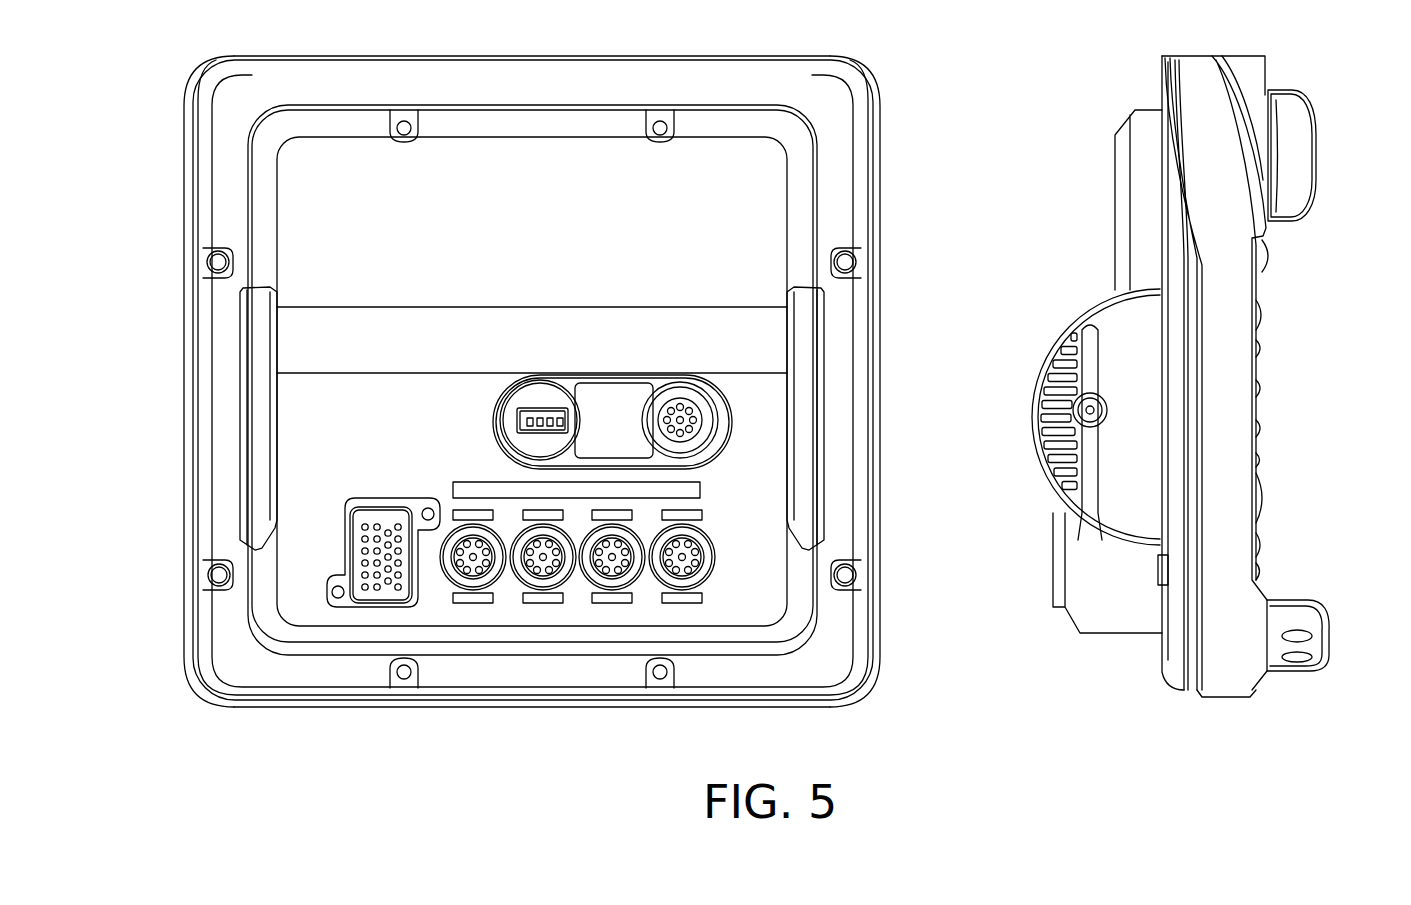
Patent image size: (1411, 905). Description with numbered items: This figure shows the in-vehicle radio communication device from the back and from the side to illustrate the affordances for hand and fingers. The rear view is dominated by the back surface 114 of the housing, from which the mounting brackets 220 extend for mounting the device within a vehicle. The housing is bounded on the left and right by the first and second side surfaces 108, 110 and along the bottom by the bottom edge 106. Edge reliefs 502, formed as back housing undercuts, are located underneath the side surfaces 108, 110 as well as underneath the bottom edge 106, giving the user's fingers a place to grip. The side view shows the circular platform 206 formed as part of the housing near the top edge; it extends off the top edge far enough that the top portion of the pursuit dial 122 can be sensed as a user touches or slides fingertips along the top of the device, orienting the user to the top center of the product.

The bottom edge 106 is at (323, 707).
The first side surface 108 is at (880, 440).
The second side surface 110 is at (184, 447).
The back surface 114 is at (742, 233).
The pursuit dial 122 is at (1318, 163).
The circular platform 206 is at (1248, 67).
The mounting brackets 220 is at (257, 367).
The edge reliefs 502 is at (193, 640).